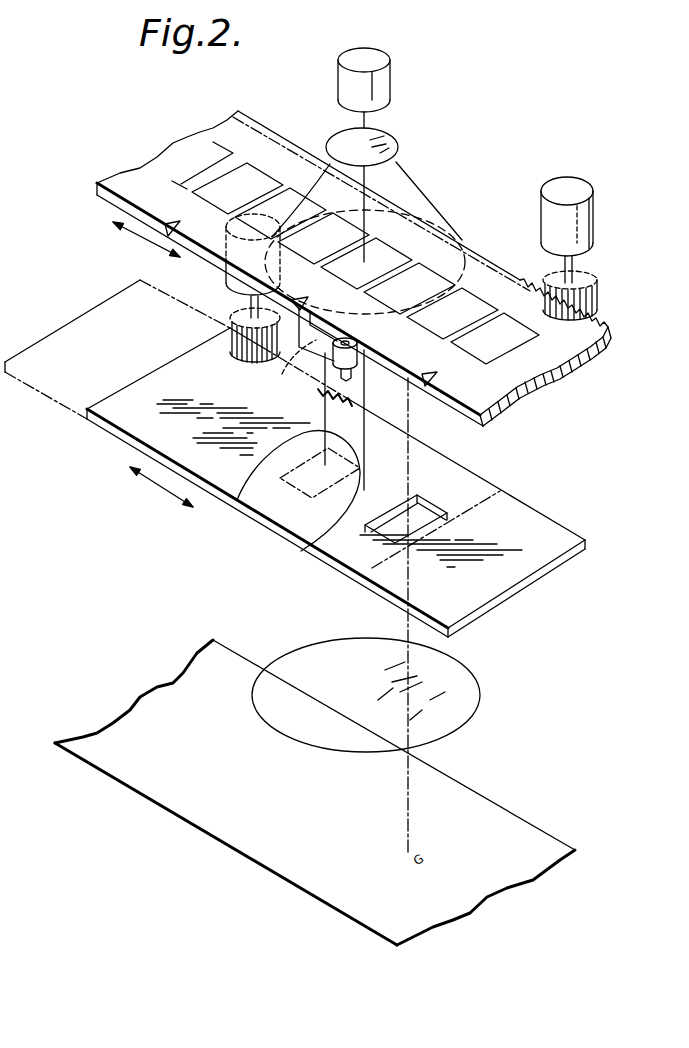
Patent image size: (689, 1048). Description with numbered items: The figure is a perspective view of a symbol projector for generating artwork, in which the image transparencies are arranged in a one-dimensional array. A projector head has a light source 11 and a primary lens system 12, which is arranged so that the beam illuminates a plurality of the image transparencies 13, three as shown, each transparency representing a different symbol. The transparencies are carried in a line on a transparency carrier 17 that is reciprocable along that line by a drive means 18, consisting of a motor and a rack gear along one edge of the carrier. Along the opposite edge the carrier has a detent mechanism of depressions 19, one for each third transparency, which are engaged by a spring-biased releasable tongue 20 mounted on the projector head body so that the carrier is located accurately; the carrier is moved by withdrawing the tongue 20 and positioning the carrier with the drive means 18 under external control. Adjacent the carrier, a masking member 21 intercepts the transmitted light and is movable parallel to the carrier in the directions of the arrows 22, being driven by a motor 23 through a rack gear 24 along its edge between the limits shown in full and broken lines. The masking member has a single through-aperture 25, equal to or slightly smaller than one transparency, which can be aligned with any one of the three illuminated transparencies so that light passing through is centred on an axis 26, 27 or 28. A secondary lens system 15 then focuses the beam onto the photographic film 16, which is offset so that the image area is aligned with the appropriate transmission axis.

The light source 11 is at (381, 87).
The primary lens system 12 is at (390, 140).
The image transparencies 13 is at (422, 270).
The secondary lens system 15 is at (293, 648).
The photographic film 16 is at (147, 713).
The transparency carrier 17 is at (553, 378).
The drive means 18 is at (592, 200).
The depressions 19 is at (170, 232).
The releasable tongue 20 is at (287, 367).
The masking member 21 is at (523, 570).
The arrows 22 is at (160, 490).
The motor 23 is at (227, 278).
The rack gear 24 is at (215, 330).
The through-aperture 25 is at (483, 603).
The axis 26 is at (405, 630).
The axis 27 is at (298, 551).
The axis 28 is at (311, 430).